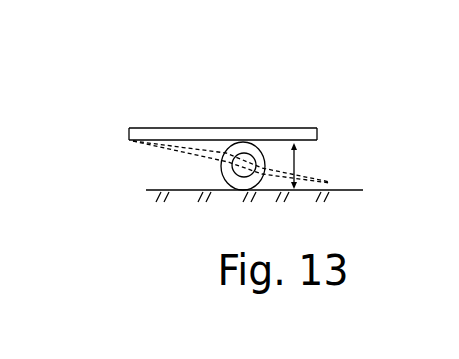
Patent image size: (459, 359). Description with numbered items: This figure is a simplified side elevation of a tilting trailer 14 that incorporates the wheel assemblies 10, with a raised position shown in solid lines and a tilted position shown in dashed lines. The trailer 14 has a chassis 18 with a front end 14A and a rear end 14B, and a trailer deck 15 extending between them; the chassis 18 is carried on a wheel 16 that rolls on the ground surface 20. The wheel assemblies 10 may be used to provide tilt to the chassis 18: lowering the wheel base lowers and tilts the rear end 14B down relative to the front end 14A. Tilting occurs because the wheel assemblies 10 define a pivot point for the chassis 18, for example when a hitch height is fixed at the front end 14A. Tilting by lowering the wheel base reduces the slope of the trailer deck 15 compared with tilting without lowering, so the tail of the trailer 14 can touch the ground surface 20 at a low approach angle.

The wheel assembly 10 is at (253, 127).
The trailer 14 is at (155, 127).
The front end 14A is at (130, 140).
The rear end 14B is at (318, 135).
The trailer deck 15 is at (208, 127).
The wheel 16 is at (221, 167).
The chassis 18 is at (147, 159).
The ground surface 20 is at (328, 189).